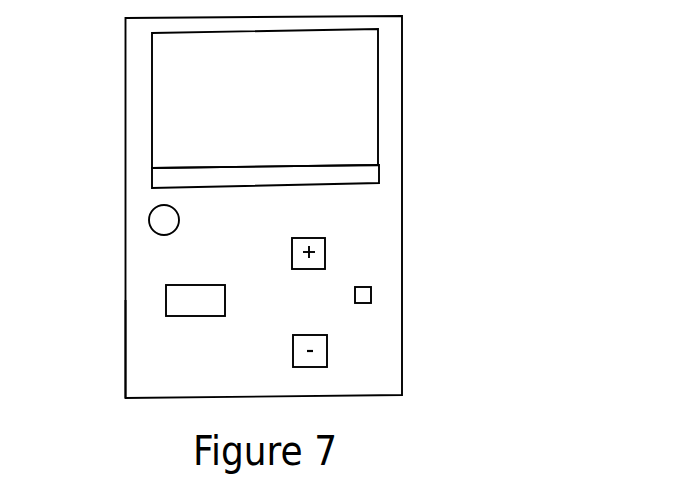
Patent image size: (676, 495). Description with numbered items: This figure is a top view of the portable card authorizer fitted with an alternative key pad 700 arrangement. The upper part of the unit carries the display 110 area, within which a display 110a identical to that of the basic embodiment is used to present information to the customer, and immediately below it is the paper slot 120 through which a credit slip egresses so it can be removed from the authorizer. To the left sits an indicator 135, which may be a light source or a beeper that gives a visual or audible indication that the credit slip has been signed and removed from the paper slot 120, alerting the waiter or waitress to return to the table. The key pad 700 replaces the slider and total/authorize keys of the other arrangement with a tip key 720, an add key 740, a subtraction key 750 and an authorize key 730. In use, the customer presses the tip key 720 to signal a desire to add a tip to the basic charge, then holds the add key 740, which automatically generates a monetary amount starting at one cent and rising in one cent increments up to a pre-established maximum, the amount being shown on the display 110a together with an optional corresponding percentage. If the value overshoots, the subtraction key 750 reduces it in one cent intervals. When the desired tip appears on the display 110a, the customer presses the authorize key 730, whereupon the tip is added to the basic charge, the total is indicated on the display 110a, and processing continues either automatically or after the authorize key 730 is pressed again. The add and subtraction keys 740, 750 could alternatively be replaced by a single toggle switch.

The display 110 is at (410, 96).
The display 110a is at (170, 78).
The paper slot 120 is at (374, 178).
The indicator 135 is at (150, 210).
The key pad 700 is at (126, 350).
The tip key 720 is at (166, 291).
The authorize key 730 is at (371, 291).
The add key 740 is at (325, 250).
The subtraction key 750 is at (327, 350).